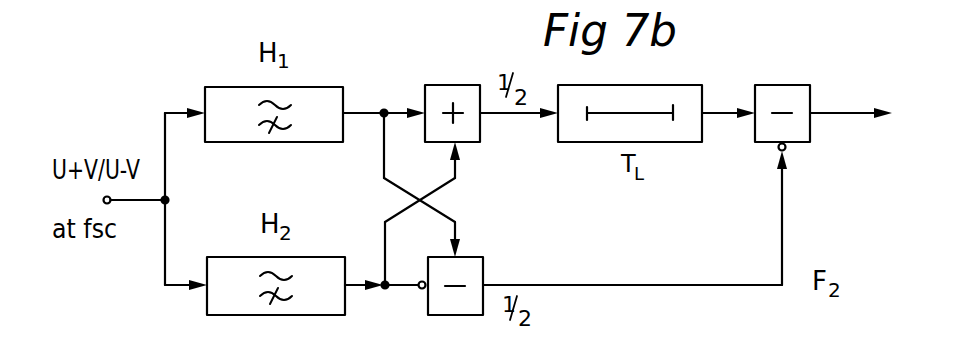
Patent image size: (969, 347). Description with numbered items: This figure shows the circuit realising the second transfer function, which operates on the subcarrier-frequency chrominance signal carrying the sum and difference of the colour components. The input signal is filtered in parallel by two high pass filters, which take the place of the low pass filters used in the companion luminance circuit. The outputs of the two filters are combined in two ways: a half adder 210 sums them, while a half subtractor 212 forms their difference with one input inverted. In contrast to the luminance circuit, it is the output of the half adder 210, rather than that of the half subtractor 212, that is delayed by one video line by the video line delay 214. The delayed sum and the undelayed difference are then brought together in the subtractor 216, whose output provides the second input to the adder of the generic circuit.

The half adder 210 is at (440, 92).
The half subtractor 212 is at (472, 265).
The video line delay 214 is at (624, 92).
The subtractor 216 is at (800, 92).